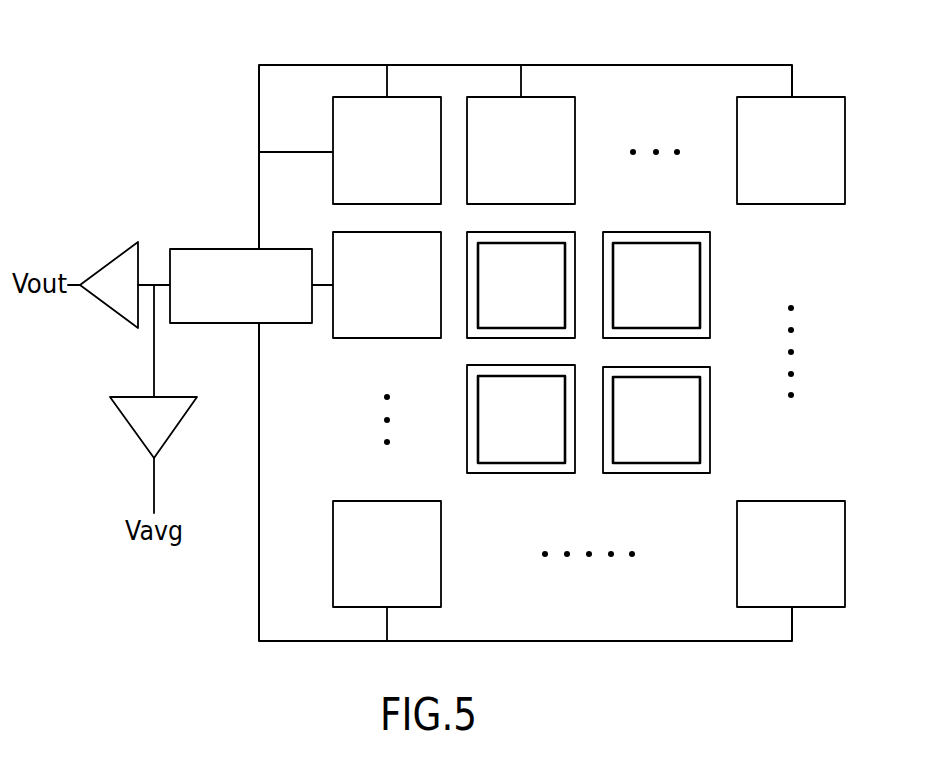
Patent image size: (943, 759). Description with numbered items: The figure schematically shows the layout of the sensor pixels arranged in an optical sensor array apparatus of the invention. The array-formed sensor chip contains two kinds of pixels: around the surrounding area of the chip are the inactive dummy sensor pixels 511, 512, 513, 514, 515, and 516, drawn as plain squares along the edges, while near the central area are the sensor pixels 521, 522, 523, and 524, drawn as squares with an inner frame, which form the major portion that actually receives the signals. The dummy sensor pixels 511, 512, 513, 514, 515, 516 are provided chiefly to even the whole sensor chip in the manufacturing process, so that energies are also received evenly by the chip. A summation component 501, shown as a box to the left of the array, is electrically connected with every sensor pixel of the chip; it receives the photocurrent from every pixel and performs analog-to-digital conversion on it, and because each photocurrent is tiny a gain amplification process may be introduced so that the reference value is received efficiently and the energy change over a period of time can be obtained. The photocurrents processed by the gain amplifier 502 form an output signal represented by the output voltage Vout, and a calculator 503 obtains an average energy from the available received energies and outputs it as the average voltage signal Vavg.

The summation component 501 is at (208, 249).
The gain amplifier 502 is at (113, 267).
The calculator 503 is at (140, 430).
The inactive dummy sensor pixel 511 is at (353, 97).
The inactive dummy sensor pixel 512 is at (488, 97).
The inactive dummy sensor pixel 513 is at (757, 97).
The inactive dummy sensor pixel 514 is at (351, 340).
The inactive dummy sensor pixel 515 is at (441, 585).
The inactive dummy sensor pixel 516 is at (737, 585).
The sensor pixel 521 is at (478, 318).
The sensor pixel 522 is at (700, 263).
The sensor pixel 523 is at (478, 445).
The sensor pixel 524 is at (700, 440).